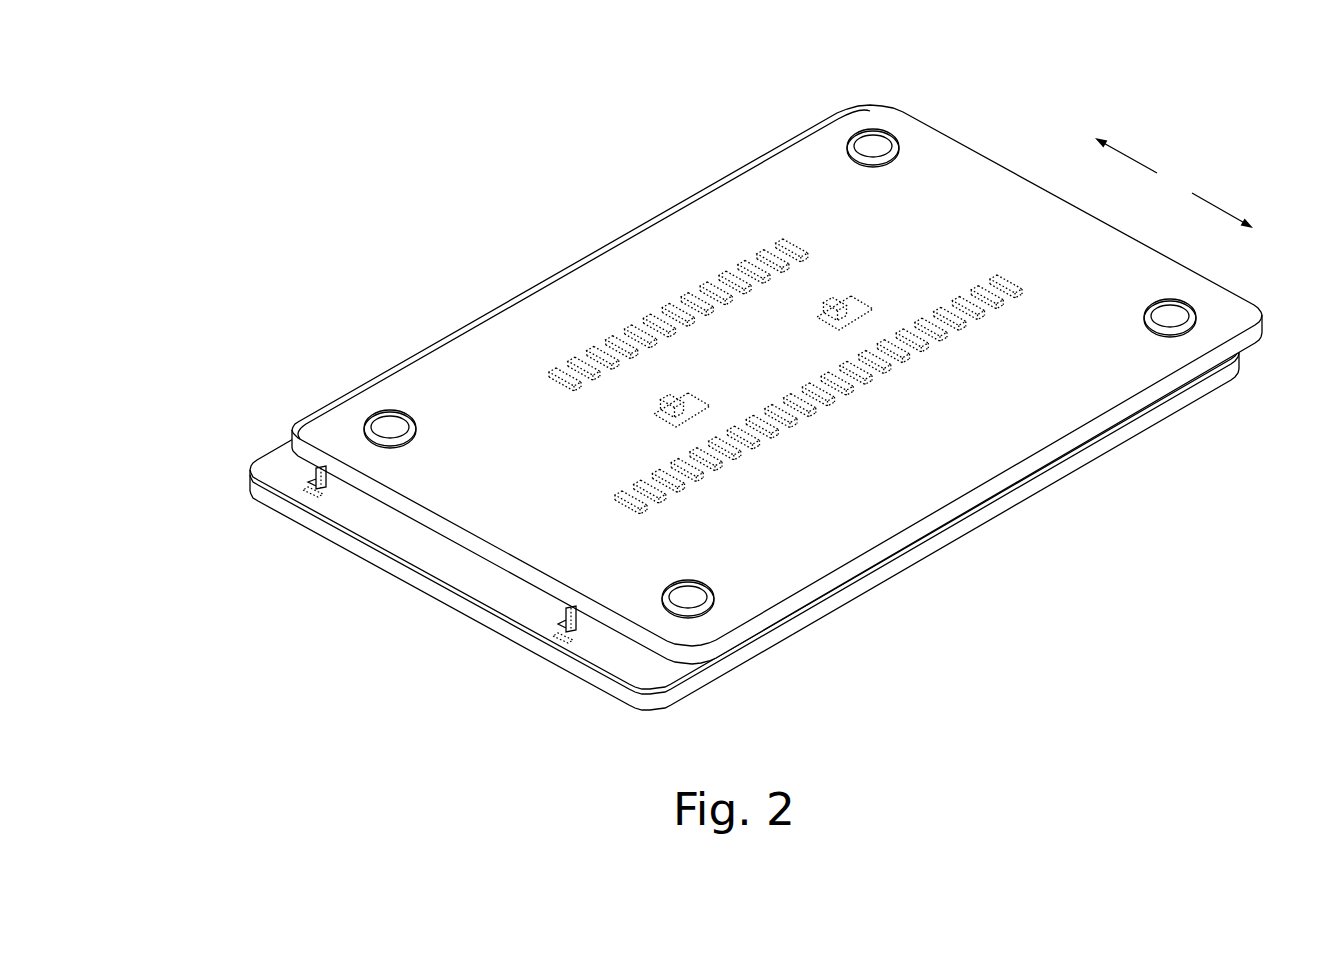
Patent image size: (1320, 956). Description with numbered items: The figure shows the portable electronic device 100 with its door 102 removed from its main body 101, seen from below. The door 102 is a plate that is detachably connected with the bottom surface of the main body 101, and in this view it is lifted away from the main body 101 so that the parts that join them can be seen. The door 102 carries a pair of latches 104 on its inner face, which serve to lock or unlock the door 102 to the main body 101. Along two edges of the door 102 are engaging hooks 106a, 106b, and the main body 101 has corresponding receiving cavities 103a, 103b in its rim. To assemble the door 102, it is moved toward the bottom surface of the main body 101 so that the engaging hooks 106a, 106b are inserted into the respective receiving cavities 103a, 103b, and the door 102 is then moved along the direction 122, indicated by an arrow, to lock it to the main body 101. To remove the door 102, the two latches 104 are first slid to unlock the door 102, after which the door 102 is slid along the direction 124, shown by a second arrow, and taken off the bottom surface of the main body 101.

The portable electronic device 100 is at (710, 421).
The main body 101 is at (699, 420).
The door 102 is at (691, 422).
The receiving cavity 103a is at (560, 640).
The receiving cavity 103b is at (307, 498).
The latch 104 is at (697, 392).
The engaging hook 106a is at (580, 625).
The engaging hook 106b is at (312, 476).
The direction 122 is at (1137, 160).
The direction 124 is at (1213, 207).